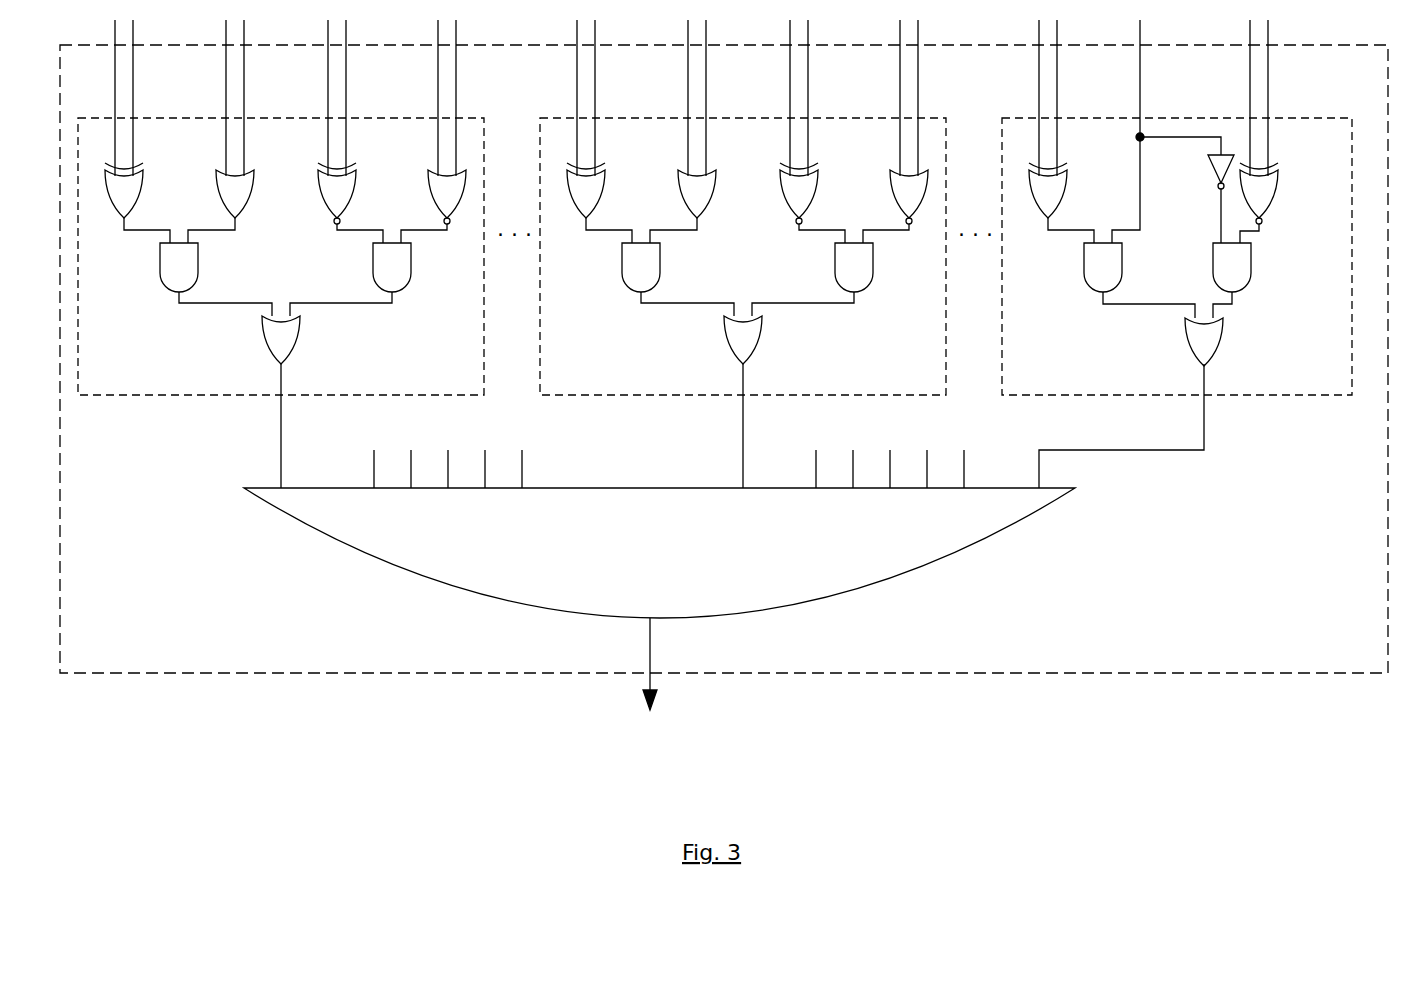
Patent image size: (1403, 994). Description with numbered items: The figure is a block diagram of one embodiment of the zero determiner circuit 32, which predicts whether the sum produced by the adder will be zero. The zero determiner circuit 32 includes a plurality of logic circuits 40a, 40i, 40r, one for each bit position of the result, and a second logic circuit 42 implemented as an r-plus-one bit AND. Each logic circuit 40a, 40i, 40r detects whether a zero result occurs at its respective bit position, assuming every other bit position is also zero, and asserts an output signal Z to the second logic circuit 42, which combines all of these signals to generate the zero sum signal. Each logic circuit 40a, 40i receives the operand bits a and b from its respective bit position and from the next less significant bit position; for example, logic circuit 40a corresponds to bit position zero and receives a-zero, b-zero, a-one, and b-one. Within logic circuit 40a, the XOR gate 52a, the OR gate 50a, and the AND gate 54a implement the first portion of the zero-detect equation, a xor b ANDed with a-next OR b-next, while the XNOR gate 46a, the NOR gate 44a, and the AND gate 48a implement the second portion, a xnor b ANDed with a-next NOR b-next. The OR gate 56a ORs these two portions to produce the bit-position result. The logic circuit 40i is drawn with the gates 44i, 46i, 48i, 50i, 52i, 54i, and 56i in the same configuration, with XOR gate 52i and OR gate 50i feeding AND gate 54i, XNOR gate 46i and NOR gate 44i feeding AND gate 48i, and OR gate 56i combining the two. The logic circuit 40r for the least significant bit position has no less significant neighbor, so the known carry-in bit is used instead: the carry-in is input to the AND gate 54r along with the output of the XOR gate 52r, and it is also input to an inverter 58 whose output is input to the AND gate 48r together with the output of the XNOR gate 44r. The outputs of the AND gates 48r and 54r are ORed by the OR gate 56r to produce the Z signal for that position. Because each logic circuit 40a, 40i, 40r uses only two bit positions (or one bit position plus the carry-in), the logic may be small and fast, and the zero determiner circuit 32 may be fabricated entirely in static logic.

The zero determiner circuit 32 is at (724, 359).
The logic circuit 40a is at (282, 254).
The logic circuit 40i is at (752, 254).
The logic circuit 40r is at (1177, 254).
The second logic circuit 42 is at (659, 580).
The NOR gate 44a is at (443, 191).
The NOR gate 44i is at (875, 180).
The XNOR gate 44r is at (1255, 188).
The XNOR gate 46a is at (335, 188).
The XNOR gate 46i is at (828, 194).
The AND gate 48a is at (392, 287).
The AND gate 48i is at (884, 280).
The AND gate 48r is at (1238, 288).
The OR gate 50a is at (233, 198).
The OR gate 50i is at (726, 200).
The XOR gate 52a is at (122, 198).
The XOR gate 52i is at (615, 197).
The XOR gate 52r is at (1046, 198).
The AND gate 54a is at (185, 262).
The AND gate 54i is at (668, 269).
The AND gate 54r is at (1109, 262).
The OR gate 56a is at (283, 342).
The OR gate 56i is at (774, 344).
The OR gate 56r is at (1206, 342).
The inverter 58 is at (1220, 165).